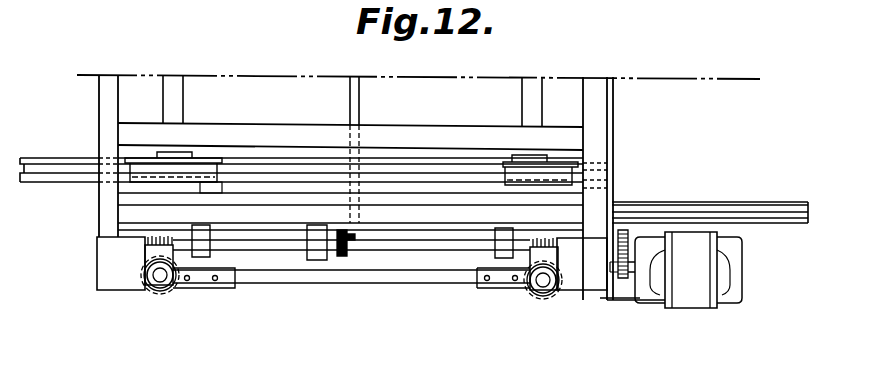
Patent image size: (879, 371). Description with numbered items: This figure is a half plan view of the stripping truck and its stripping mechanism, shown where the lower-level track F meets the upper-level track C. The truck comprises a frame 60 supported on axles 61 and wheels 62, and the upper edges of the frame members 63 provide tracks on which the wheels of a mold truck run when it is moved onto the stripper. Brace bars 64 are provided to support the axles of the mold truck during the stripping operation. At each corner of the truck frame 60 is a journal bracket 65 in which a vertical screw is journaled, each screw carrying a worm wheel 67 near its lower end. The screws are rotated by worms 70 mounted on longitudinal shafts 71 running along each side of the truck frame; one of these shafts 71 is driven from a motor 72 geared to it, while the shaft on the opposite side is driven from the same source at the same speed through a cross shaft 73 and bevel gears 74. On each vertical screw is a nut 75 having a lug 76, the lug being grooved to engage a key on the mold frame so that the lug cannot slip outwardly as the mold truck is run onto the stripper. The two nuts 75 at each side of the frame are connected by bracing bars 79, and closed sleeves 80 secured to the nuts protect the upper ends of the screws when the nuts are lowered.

The truck frame 60 is at (108, 114).
The axles 61 is at (178, 89).
The wheels 62 is at (192, 168).
The frame members 63 is at (272, 207).
The brace bars 64 is at (337, 130).
The journal bracket 65 is at (120, 270).
The worm wheel 67 is at (178, 292).
The worms 70 is at (152, 236).
The longitudinal shafts 71 is at (408, 250).
The motor 72 is at (671, 269).
The cross shaft 73 is at (352, 90).
The bevel gears 74 is at (356, 240).
The nut 75 is at (154, 290).
The lug 76 is at (146, 256).
The bracing bars 79 is at (448, 273).
The closed sleeves 80 is at (164, 286).
The tracks F is at (59, 168).
The track C is at (770, 212).